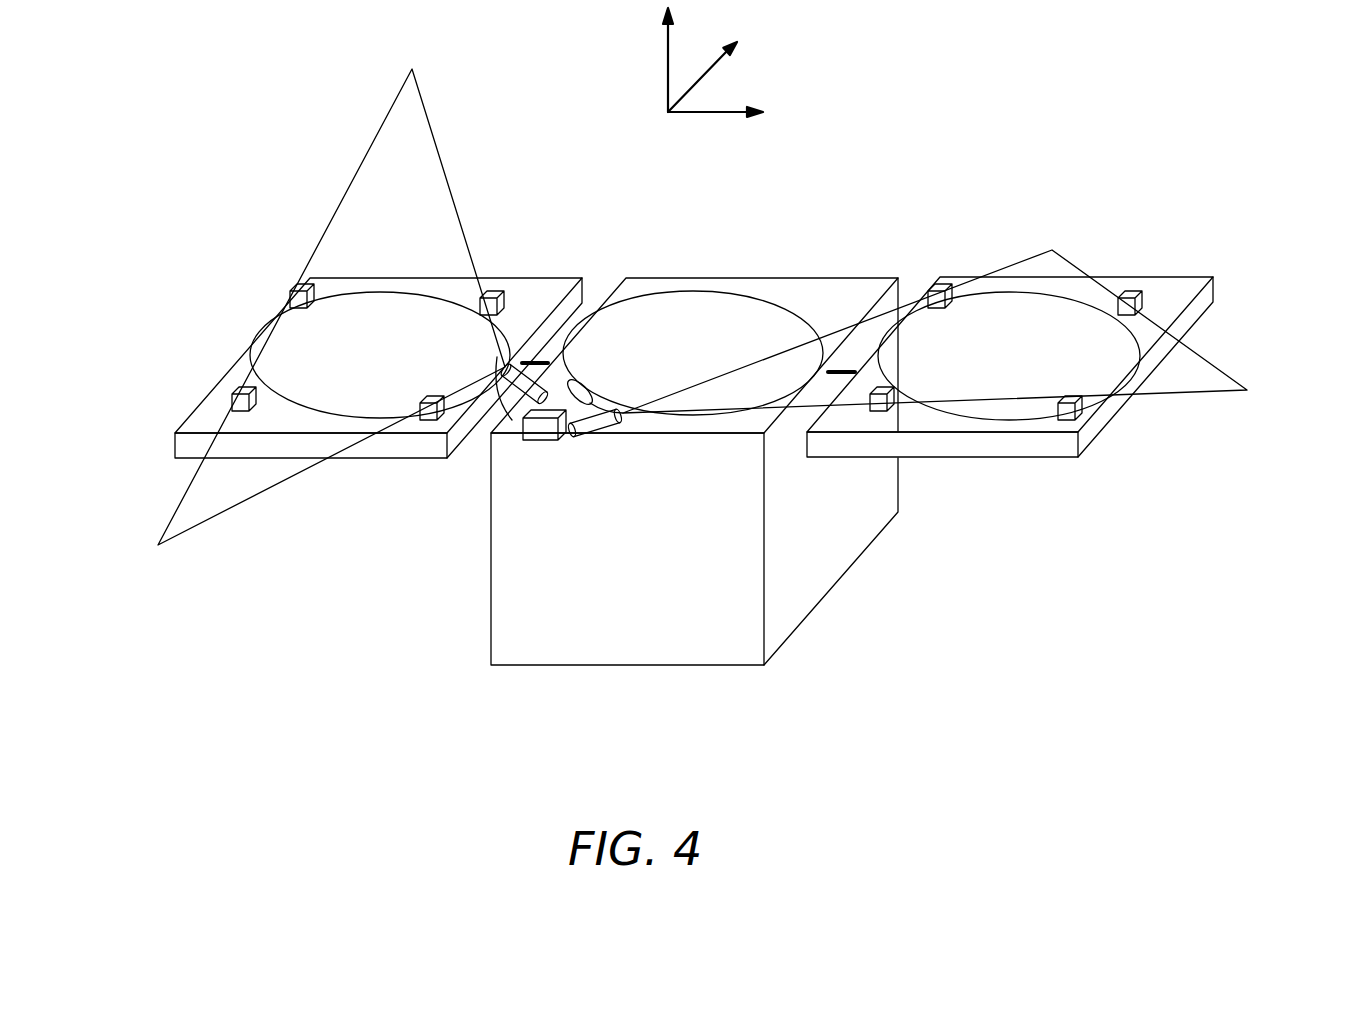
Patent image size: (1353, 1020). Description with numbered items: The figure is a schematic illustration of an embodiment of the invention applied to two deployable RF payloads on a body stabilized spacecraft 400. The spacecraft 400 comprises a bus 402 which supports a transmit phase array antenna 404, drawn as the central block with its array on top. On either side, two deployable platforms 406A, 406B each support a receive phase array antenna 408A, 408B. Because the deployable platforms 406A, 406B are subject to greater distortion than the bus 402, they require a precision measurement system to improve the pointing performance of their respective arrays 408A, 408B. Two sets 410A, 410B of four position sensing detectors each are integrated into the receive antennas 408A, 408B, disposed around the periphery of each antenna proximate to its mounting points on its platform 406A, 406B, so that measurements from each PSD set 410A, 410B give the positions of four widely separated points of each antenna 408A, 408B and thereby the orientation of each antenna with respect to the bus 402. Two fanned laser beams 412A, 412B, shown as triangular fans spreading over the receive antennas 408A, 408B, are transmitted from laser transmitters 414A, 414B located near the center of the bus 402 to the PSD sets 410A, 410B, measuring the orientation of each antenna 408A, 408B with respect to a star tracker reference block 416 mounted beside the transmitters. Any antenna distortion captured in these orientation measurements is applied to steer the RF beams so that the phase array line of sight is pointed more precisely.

The body stabilized spacecraft 400 is at (978, 132).
The bus 402 is at (805, 590).
The transmit phase array antenna 404 is at (743, 313).
The deployable platform 406A is at (207, 418).
The deployable platform 406B is at (1163, 293).
The receive phase array antenna 408A is at (277, 348).
The receive phase array antenna 408B is at (993, 405).
The PSD set 410A is at (508, 280).
The PSD set 410B is at (955, 272).
The fanned laser beam 412A is at (370, 182).
The fanned laser beam 412B is at (1188, 372).
The laser transmitter 414A is at (513, 382).
The laser transmitter 414B is at (573, 433).
The star tracker reference block 416 is at (512, 452).